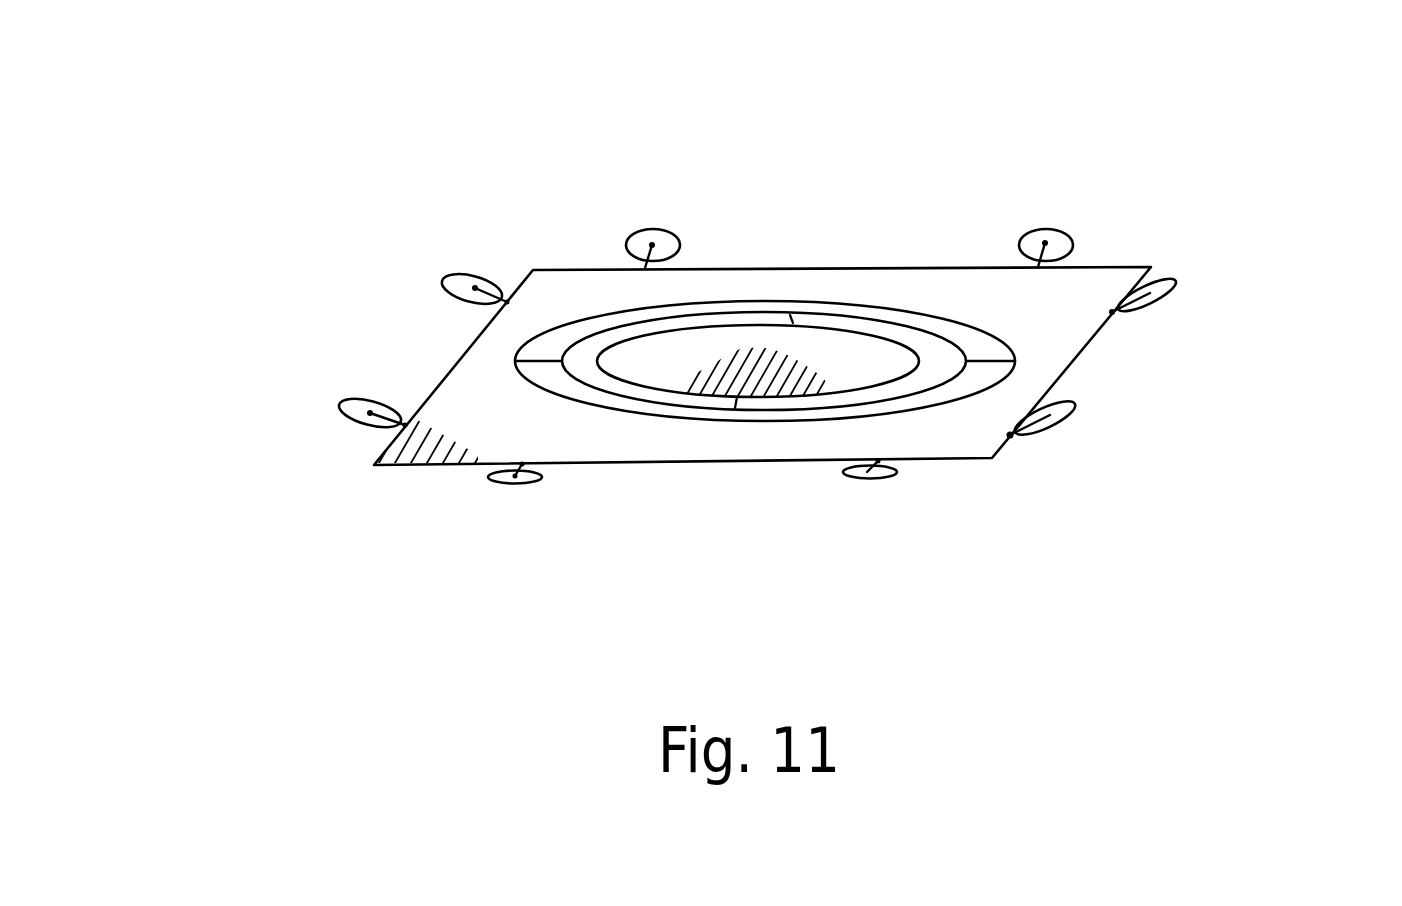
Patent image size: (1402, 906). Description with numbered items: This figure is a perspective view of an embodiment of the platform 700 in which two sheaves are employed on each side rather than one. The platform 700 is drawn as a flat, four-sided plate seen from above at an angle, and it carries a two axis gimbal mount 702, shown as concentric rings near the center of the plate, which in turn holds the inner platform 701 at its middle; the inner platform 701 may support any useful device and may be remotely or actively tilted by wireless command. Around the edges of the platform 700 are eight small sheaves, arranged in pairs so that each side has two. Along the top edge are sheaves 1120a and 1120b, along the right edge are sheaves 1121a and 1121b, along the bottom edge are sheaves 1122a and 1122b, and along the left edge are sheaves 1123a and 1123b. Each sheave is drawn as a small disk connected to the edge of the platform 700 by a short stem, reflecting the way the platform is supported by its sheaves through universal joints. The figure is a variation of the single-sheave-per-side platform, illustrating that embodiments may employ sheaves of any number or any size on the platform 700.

The platform 700 is at (990, 470).
The inner platform 701 is at (667, 346).
The two axis gimbal mount 702 is at (937, 333).
The sheave 1120a is at (670, 222).
The sheave 1120b is at (1077, 233).
The sheave 1121a is at (1082, 430).
The sheave 1121b is at (1162, 317).
The sheave 1122a is at (467, 497).
The sheave 1122b is at (847, 490).
The sheave 1123a is at (343, 443).
The sheave 1123b is at (423, 298).